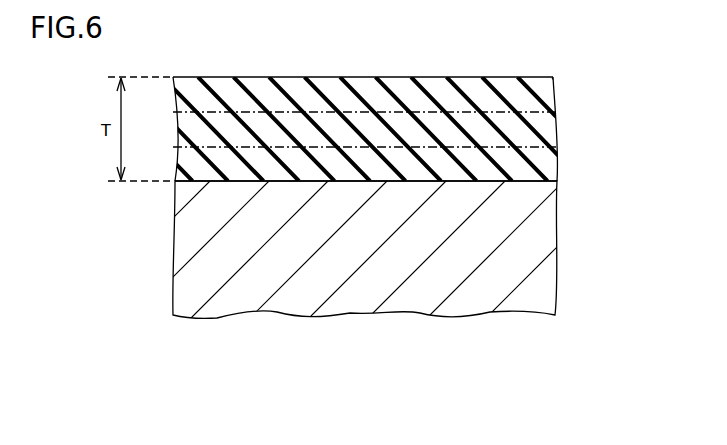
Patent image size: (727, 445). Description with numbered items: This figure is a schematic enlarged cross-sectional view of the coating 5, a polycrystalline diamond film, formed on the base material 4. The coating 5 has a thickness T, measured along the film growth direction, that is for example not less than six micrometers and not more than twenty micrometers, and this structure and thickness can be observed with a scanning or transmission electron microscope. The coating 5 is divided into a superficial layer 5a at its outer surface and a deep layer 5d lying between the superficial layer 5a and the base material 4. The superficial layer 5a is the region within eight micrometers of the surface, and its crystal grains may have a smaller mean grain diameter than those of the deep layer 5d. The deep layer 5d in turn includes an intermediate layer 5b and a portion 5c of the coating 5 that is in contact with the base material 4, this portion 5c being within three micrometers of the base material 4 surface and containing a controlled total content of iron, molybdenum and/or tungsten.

The coating 5 is at (364, 128).
The superficial layer 5a is at (542, 93).
The intermediate layer 5b is at (542, 128).
The portion of coating in contact with base material 5c is at (611, 112).
The deep layer 5d is at (355, 129).
The base material 4 is at (541, 240).